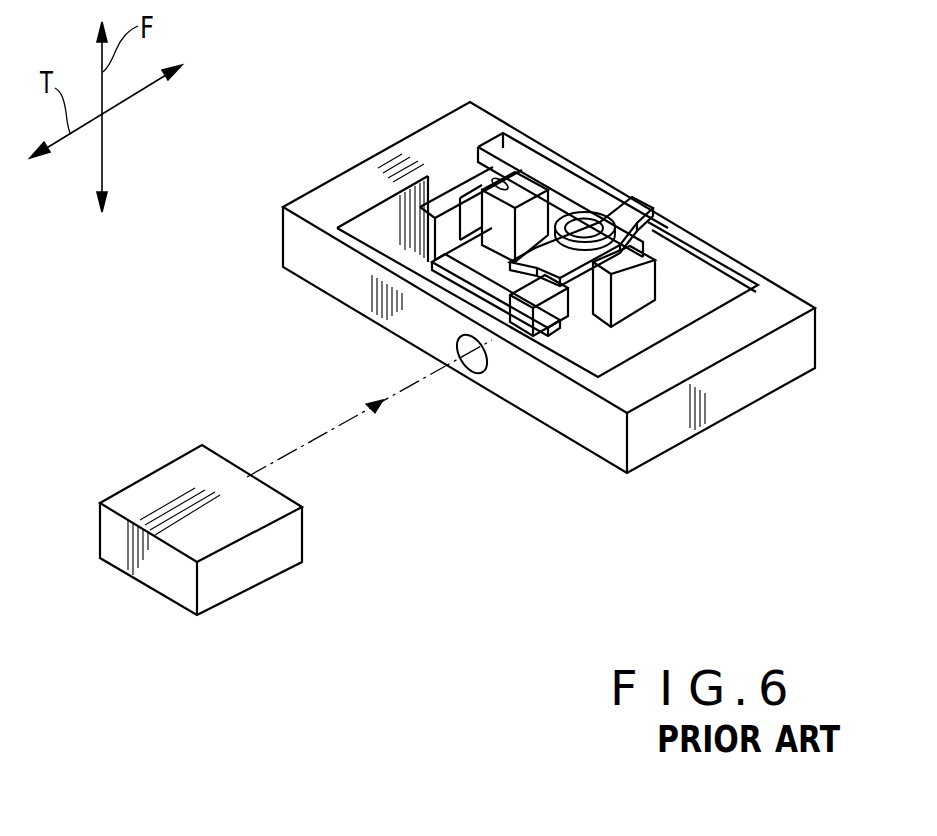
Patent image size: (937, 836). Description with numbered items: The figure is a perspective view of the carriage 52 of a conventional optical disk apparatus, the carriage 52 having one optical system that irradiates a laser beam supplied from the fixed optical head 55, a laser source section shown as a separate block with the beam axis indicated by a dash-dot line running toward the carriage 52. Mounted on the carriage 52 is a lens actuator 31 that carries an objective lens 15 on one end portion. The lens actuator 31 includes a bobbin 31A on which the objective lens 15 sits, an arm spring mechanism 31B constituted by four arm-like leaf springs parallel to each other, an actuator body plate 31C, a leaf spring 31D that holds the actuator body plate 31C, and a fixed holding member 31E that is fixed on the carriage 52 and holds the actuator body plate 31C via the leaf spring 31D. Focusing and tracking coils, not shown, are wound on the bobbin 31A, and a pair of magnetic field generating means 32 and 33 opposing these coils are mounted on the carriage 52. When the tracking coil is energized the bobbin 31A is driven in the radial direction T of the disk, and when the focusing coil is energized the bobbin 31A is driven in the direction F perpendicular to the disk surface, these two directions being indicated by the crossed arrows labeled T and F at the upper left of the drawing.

The objective lens 15 is at (597, 218).
The lens actuator 31 is at (670, 203).
The bobbin 31A is at (638, 203).
The arm spring mechanism 31B is at (460, 267).
The actuator body plate 31C is at (447, 200).
The leaf spring 31D is at (490, 217).
The fixed holding member 31E is at (468, 193).
The magnetic field generating means 32 is at (543, 213).
The magnetic field generating means 33 is at (635, 252).
The carriage 52 is at (768, 294).
The fixed optical head 55 is at (162, 480).